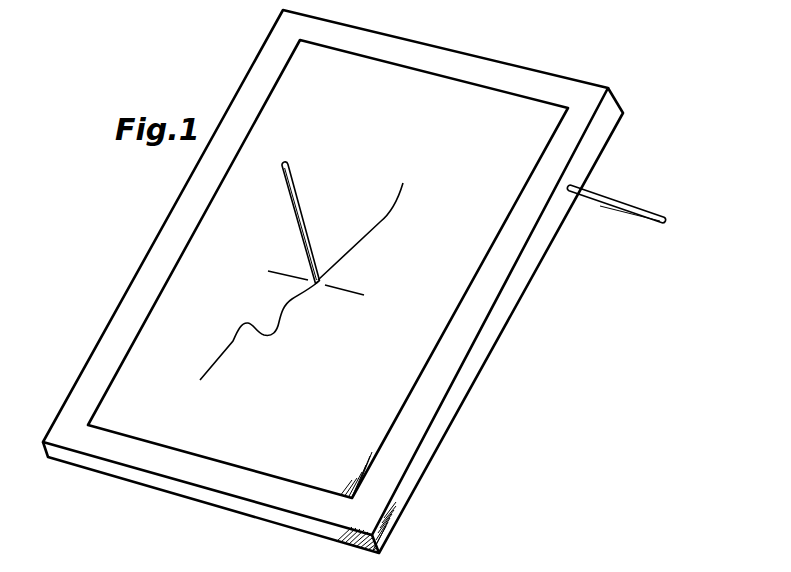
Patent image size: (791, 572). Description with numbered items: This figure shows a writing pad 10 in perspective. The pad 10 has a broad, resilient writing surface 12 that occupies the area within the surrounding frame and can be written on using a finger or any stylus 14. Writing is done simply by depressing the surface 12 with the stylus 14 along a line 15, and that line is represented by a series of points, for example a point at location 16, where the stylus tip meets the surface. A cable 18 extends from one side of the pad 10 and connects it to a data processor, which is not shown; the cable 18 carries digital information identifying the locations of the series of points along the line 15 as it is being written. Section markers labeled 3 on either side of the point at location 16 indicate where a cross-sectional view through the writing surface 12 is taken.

The writing pad 10 is at (179, 499).
The writing surface 12 is at (534, 132).
The stylus 14 is at (303, 214).
The line 15 is at (379, 222).
The location 16 is at (322, 282).
The cable 18 is at (635, 208).
The section line 3- 3 is at (351, 295).